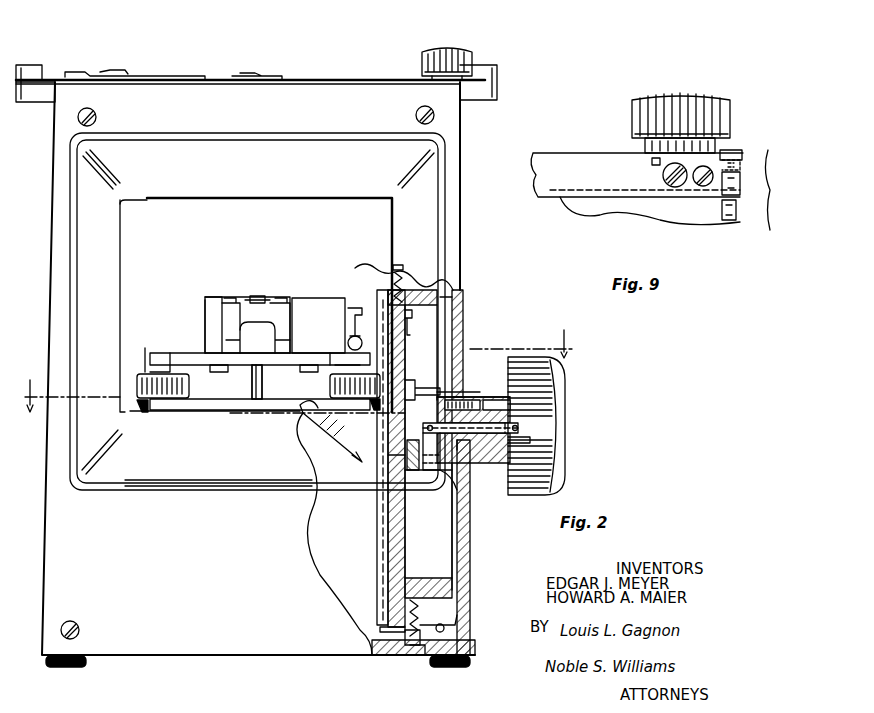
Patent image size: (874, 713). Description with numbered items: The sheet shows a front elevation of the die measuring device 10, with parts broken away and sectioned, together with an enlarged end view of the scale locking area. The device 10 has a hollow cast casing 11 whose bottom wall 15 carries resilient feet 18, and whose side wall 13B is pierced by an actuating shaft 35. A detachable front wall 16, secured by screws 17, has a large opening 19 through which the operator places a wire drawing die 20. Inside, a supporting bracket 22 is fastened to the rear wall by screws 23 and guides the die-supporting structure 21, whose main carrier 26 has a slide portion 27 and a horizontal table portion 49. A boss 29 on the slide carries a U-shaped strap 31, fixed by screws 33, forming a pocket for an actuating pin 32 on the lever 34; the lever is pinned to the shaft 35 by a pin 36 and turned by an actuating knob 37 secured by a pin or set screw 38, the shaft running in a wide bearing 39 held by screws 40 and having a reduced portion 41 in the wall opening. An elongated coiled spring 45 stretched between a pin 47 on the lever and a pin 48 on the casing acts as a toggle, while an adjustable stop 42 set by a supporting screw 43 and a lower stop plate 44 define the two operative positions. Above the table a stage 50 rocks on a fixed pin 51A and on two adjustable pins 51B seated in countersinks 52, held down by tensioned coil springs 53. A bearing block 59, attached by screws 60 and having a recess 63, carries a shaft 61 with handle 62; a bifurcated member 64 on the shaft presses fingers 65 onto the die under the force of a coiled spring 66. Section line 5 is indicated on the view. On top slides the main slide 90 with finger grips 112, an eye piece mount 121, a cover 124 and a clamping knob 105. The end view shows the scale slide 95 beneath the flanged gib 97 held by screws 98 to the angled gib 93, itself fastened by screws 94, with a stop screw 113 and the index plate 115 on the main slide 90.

In FIG. 2, the device 10 is at (471, 193).
In FIG. 2, the finger gripping means 112 is at (33, 72).
In FIG. 2, the main slide 90 is at (44, 78).
In FIG. 9, the main slide 90 is at (584, 152).
In FIG. 2, the cover 124 is at (166, 76).
In FIG. 2, the eye piece mount 121 is at (268, 76).
In FIG. 2, the clamping knob 105 is at (462, 52).
In FIG. 9, the clamping knob 105 is at (720, 100).
In FIG. 2, the screws 17 is at (78, 117).
In FIG. 2, the resilient buttons or feet 18 is at (70, 670).
In FIG. 2, the front wall or cover 16 is at (82, 232).
In FIG. 2, the opening 19 is at (120, 280).
In FIG. 2, the die-supporting structure 21 is at (189, 344).
In FIG. 2, the wire drawing die 20 is at (215, 345).
In FIG. 2, the stage 50 is at (150, 370).
In FIG. 2, the tensioned coil spring 53 is at (138, 378).
In FIG. 2, the recess cut-out portion 63 is at (214, 297).
In FIG. 2, the bifurcated member 64 is at (236, 300).
In FIG. 2, the coiled spring 66 is at (258, 296).
In FIG. 2, the shaft 61 is at (278, 300).
In FIG. 2, the fingers 65 is at (238, 344).
In FIG. 2, the bearing block 59 is at (320, 298).
In FIG. 2, the actuating handle 62 is at (358, 330).
In FIG. 2, the countersinks 52 is at (345, 365).
In FIG. 2, the screws 60 is at (235, 380).
In FIG. 2, the adjustable pins 51B is at (190, 375).
In FIG. 2, the fixed pin 51A is at (250, 400).
In FIG. 2, the section line 5 is at (298, 363).
In FIG. 2, the table portion 49 is at (334, 528).
In FIG. 2, the main carrier 26 is at (362, 462).
In FIG. 2, the supporting screw 43 is at (392, 275).
In FIG. 2, the slide portion 27 is at (377, 556).
In FIG. 2, the supporting bracket 22 is at (458, 325).
In FIG. 2, the screws 23 is at (460, 290).
In FIG. 2, the main housing or casing 11 is at (463, 310).
In FIG. 2, the adjustable stop 42 is at (412, 326).
In FIG. 2, the pin 47 is at (418, 380).
In FIG. 2, the screws 40 is at (470, 392).
In FIG. 2, the pin 36 is at (462, 397).
In FIG. 2, the bearing 39 is at (495, 398).
In FIG. 2, the reduced portion 41 is at (470, 463).
In FIG. 2, the pin or set screw 38 is at (525, 428).
In FIG. 2, the actuating knob 37 is at (556, 378).
In FIG. 2, the shaft 35 is at (535, 445).
In FIG. 2, the screws 33 is at (405, 450).
In FIG. 2, the U-shaped strap 31 is at (420, 470).
In FIG. 2, the boss 29 is at (405, 470).
In FIG. 2, the actuating pin 32 is at (460, 480).
In FIG. 2, the actuating arm or lever 34 is at (462, 498).
In FIG. 2, the side wall 13B is at (470, 542).
In FIG. 2, the elongated coiled spring 45 is at (420, 612).
In FIG. 2, the stop plate 44 is at (378, 630).
In FIG. 2, the bottom wall 15 is at (385, 652).
In FIG. 2, the pin 48 is at (415, 648).
In FIG. 9, the scale slide 95 is at (650, 162).
In FIG. 9, the stop screw 113 is at (672, 190).
In FIG. 9, the small plate 115 is at (706, 188).
In FIG. 9, the flanged gib 97 is at (730, 150).
In FIG. 9, the screws 98 is at (740, 160).
In FIG. 9, the angled gib 93 is at (742, 185).
In FIG. 9, the screws 94 is at (740, 222).